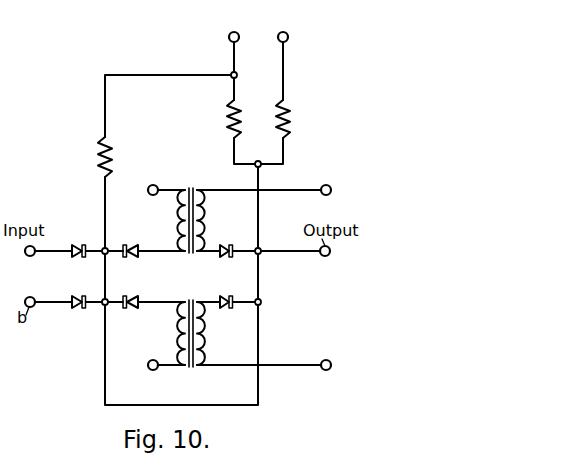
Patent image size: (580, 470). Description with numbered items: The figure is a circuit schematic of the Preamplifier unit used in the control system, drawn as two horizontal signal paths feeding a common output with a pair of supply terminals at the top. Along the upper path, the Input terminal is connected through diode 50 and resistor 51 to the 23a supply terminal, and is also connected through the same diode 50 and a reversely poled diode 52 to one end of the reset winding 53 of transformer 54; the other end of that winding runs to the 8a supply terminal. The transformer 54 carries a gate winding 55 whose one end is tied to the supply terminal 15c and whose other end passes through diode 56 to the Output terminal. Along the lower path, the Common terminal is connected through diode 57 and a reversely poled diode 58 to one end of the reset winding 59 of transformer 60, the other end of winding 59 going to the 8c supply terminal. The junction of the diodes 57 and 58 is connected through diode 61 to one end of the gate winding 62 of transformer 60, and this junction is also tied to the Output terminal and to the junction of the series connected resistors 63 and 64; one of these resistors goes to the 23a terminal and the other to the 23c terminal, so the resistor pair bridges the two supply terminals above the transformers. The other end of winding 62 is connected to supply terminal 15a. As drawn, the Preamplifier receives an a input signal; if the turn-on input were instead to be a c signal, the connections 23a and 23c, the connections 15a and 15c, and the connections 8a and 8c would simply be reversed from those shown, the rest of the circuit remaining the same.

The supply terminal 23a is at (229, 38).
The supply terminal 23c is at (288, 37).
The resistor 63 is at (227, 126).
The resistor 64 is at (291, 120).
The resistor 51 is at (112, 157).
The supply terminal 8a is at (149, 188).
The transformer 54 is at (206, 182).
The reset winding 53 is at (177, 223).
The gate winding 55 is at (203, 216).
The diode 56 is at (222, 248).
The supply terminal 15c is at (326, 185).
The diode 50 is at (82, 239).
The diode 52 is at (130, 245).
The diode 57 is at (82, 290).
The diode 58 is at (130, 296).
The transformer 60 is at (205, 295).
The diode 61 is at (230, 296).
The reset winding 59 is at (178, 338).
The gate winding 62 is at (205, 337).
The supply terminal 8c is at (149, 369).
The supply terminal 15a is at (328, 370).